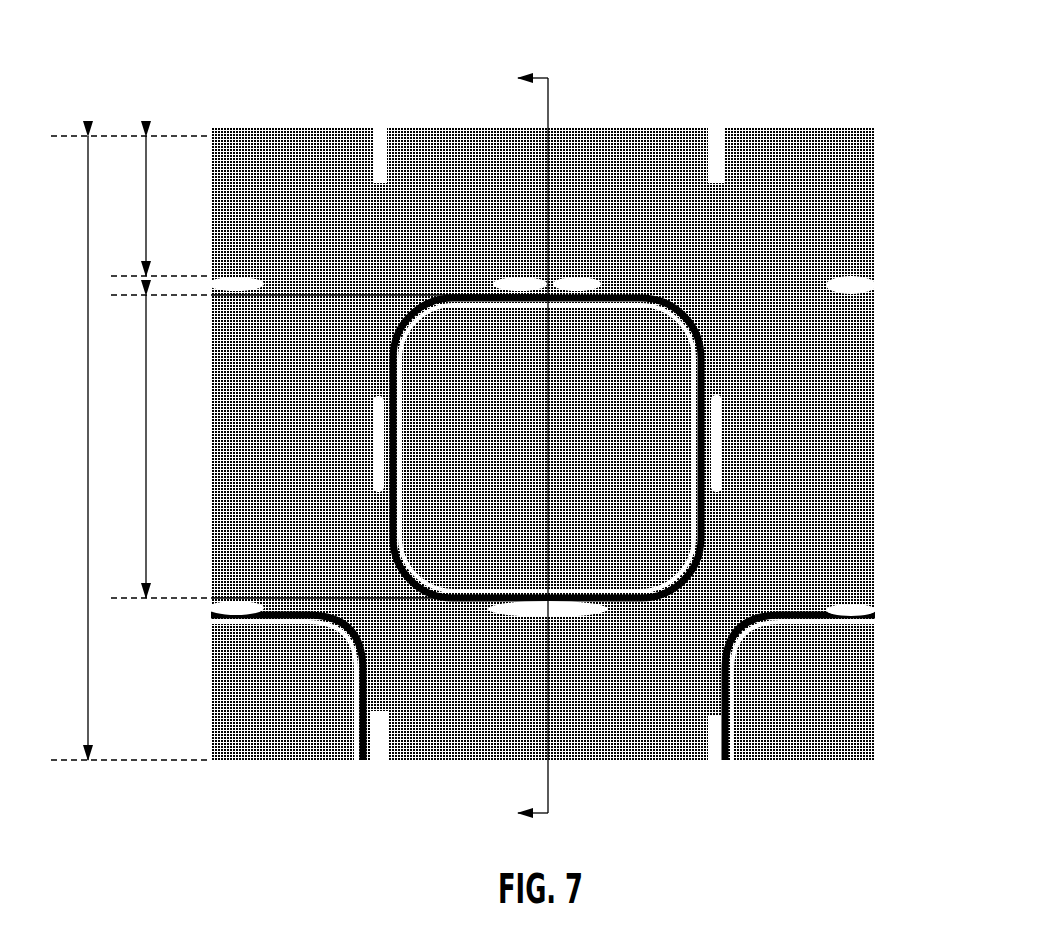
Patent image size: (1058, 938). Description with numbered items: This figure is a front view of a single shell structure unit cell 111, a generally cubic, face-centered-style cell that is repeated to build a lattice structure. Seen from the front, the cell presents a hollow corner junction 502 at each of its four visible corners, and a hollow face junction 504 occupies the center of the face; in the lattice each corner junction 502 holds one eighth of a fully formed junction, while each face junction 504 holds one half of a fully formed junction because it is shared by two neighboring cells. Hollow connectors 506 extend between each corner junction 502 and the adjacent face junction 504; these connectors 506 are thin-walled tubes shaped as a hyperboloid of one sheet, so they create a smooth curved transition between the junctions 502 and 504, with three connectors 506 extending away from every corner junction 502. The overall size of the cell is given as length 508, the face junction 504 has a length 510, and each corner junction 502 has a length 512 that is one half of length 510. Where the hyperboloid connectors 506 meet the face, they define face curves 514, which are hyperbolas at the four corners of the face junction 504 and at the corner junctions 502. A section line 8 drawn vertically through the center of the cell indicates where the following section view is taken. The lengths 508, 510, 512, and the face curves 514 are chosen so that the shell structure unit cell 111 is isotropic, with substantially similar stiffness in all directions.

The shell structure unit cell 111 is at (772, 64).
The corner junction 502 is at (217, 140).
The face junction 504 is at (448, 290).
The connector 506 is at (383, 213).
The length 508 is at (80, 440).
The length 510 is at (138, 440).
The length 512 is at (138, 220).
The face curve 514 is at (340, 137).
The section line 8 is at (516, 447).